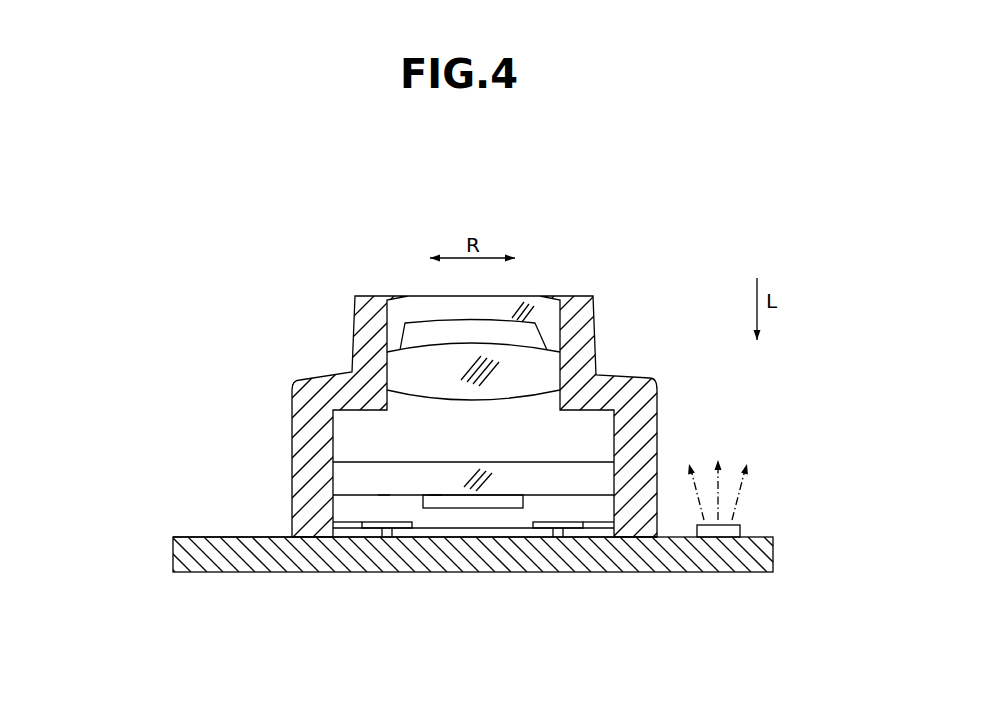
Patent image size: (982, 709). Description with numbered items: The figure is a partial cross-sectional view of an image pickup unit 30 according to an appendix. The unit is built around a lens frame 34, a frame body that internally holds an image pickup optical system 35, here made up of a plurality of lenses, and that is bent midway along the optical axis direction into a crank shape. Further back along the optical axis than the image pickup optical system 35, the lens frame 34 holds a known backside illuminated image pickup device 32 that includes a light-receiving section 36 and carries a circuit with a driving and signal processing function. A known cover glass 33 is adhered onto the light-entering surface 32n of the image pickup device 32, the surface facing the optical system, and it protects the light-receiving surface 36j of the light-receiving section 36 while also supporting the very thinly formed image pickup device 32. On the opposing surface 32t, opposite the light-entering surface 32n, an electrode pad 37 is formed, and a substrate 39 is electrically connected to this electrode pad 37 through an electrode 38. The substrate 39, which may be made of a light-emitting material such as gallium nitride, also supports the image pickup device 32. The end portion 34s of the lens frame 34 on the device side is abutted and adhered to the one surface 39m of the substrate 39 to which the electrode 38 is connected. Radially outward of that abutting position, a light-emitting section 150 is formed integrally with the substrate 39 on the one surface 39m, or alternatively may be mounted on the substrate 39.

The image pickup unit 30 is at (680, 266).
The image pickup device 32 is at (350, 512).
The light-entering surface 32n is at (435, 494).
The opposing surface 32t is at (489, 537).
The cover glass 33 is at (350, 480).
The lens frame 34 is at (577, 316).
The end portion 34s is at (312, 541).
The image pickup optical system 35 is at (535, 372).
The light-receiving section 36 is at (457, 503).
The light-receiving surface 36j is at (383, 494).
The electrode pad 37 is at (360, 523).
The electrode 38 is at (386, 537).
The substrate 39 is at (637, 567).
The one surface 39m is at (194, 536).
The light-emitting section 150 is at (733, 532).